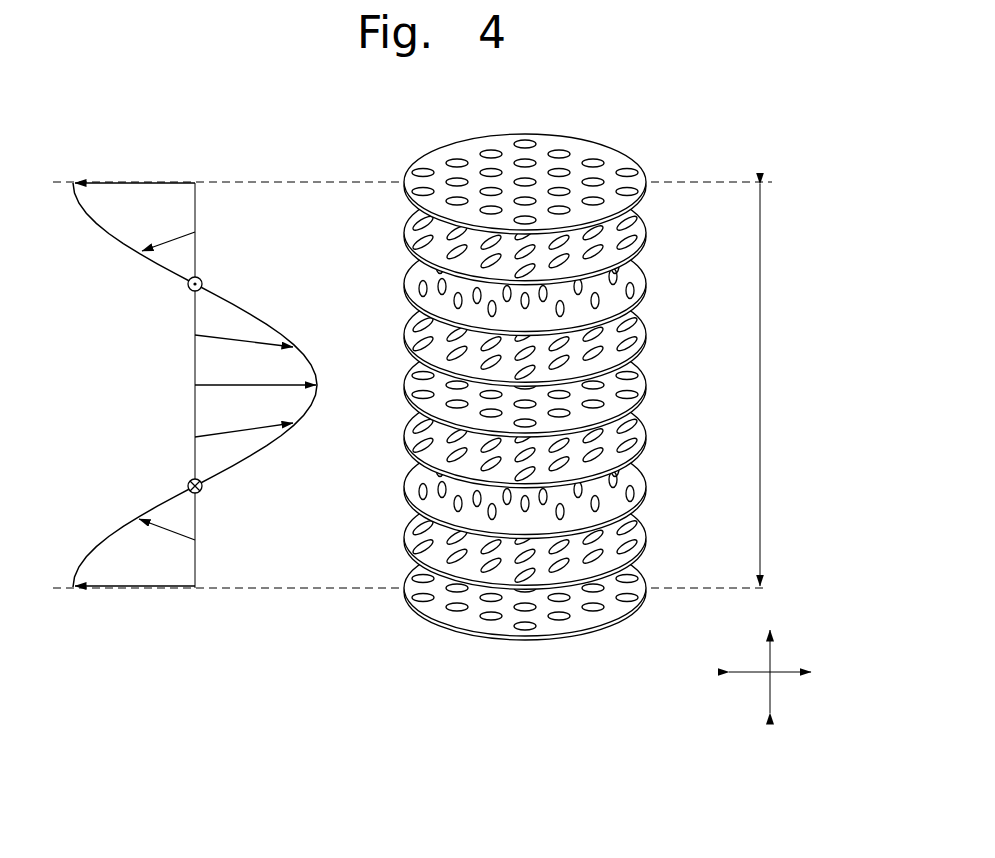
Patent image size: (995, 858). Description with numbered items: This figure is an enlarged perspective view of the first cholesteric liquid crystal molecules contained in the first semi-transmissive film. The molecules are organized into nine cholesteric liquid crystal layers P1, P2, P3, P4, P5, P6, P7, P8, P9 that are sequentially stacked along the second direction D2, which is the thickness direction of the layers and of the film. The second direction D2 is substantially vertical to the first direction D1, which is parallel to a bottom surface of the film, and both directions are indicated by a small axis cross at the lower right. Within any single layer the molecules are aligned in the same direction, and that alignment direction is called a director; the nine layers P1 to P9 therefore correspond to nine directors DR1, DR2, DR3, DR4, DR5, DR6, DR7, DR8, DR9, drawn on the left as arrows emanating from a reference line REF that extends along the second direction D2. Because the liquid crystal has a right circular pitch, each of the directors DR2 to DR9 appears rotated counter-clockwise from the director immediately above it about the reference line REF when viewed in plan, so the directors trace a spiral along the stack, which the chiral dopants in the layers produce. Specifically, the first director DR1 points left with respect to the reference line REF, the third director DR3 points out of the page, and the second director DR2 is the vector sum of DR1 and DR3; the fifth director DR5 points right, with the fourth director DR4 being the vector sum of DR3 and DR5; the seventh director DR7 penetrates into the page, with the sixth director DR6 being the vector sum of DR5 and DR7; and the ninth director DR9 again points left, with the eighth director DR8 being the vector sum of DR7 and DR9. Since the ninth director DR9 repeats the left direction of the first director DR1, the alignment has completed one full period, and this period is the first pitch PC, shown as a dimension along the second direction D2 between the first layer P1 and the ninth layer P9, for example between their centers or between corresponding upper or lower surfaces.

The first director DR1 is at (135, 182).
The second director DR2 is at (177, 237).
The third director DR3 is at (202, 276).
The fourth director DR4 is at (235, 338).
The fifth director DR5 is at (218, 385).
The sixth director DR6 is at (228, 432).
The seventh director DR7 is at (190, 480).
The eighth director DR8 is at (187, 538).
The ninth director DR9 is at (172, 583).
The reference line REF is at (195, 205).
The first layer P1 is at (620, 160).
The second layer P2 is at (620, 233).
The third layer P3 is at (620, 285).
The fourth layer P4 is at (620, 337).
The fifth layer P5 is at (620, 385).
The sixth layer P6 is at (620, 435).
The seventh layer P7 is at (620, 485).
The eighth layer P8 is at (620, 538).
The ninth layer P9 is at (607, 615).
The first pitch PC is at (772, 385).
The first direction D1 is at (784, 672).
The second direction D2 is at (774, 658).